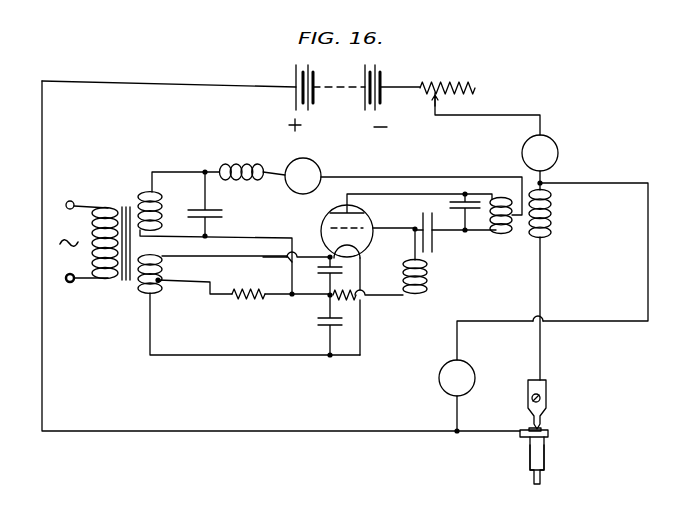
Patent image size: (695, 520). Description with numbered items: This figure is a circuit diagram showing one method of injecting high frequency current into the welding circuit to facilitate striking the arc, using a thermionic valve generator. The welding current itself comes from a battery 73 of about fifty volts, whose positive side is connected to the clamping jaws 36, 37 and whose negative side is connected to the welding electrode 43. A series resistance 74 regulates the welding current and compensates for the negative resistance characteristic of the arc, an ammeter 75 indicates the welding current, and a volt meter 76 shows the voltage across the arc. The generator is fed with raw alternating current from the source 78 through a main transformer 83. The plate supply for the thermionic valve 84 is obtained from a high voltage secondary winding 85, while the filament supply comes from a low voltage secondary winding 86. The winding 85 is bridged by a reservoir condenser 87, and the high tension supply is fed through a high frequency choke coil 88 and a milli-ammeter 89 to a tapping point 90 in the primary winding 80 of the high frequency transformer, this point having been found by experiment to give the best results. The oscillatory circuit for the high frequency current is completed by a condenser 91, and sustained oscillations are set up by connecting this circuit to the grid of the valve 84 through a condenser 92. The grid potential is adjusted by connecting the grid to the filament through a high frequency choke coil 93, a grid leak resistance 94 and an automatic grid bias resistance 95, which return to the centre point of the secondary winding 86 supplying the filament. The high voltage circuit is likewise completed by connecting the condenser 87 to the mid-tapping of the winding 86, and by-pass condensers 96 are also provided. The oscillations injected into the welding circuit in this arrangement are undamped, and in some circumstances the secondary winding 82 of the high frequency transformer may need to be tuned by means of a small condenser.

The battery 73 is at (373, 78).
The series resistance 74 is at (457, 84).
The ammeter 75 is at (557, 148).
The volt meter 76 is at (439, 378).
The source of raw alternating current 78 is at (66, 278).
The primary winding of the high frequency transformer 80 is at (505, 227).
The secondary winding of the high frequency transformer 82 is at (548, 219).
The main transformer 83 is at (121, 208).
The thermionic valve 84 is at (341, 204).
The high voltage secondary winding 85 is at (150, 190).
The low voltage secondary winding 86 is at (137, 284).
The reservoir condenser 87 is at (222, 212).
The high frequency choke coil 88 is at (240, 165).
The milli-ammeter 89 is at (311, 165).
The tapping point 90 is at (520, 217).
The condenser 91 is at (458, 212).
The condenser 92 is at (430, 238).
The high frequency choke coil 93 is at (415, 294).
The grid leak resistance 94 is at (326, 297).
The automatic grid bias resistance 95 is at (248, 298).
The by-pass condensers 96 is at (322, 255).
The welding electrode 43 is at (542, 398).
The clamping jaw 36 is at (547, 436).
The clamping jaw 37 is at (544, 457).